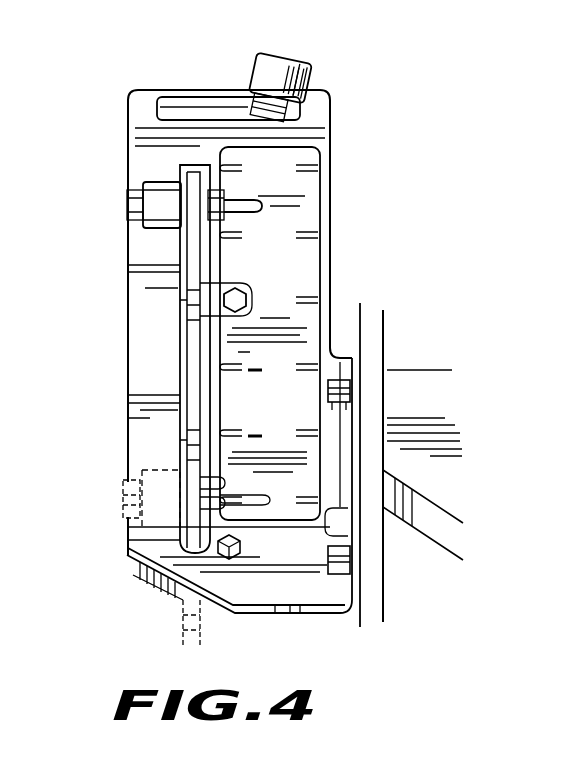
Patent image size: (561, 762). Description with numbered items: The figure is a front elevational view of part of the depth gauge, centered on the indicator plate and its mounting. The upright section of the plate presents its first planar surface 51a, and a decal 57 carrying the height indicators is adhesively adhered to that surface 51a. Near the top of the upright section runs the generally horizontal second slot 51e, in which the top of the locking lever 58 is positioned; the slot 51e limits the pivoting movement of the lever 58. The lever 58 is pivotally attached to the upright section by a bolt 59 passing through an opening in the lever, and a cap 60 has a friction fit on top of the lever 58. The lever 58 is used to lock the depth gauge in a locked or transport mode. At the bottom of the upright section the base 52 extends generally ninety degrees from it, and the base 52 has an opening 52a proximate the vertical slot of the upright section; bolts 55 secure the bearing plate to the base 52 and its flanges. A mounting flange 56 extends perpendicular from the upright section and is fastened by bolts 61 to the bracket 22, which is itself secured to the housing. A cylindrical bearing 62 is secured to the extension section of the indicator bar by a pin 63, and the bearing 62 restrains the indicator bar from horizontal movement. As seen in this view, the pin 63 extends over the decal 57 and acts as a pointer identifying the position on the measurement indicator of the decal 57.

The bracket 22 is at (378, 358).
The first planar surface 51a is at (158, 406).
The second slot 51e is at (184, 103).
The base 52 is at (300, 590).
The opening 52a is at (153, 536).
The bolt 55 is at (242, 546).
The mounting flange 56 is at (353, 455).
The decal 57 is at (302, 263).
The locking lever 58 is at (250, 100).
The bolt 59 is at (222, 300).
The cap 60 is at (312, 82).
The bolt 61 is at (352, 362).
The cylindrical bearing 62 is at (163, 192).
The pin 63 is at (262, 206).